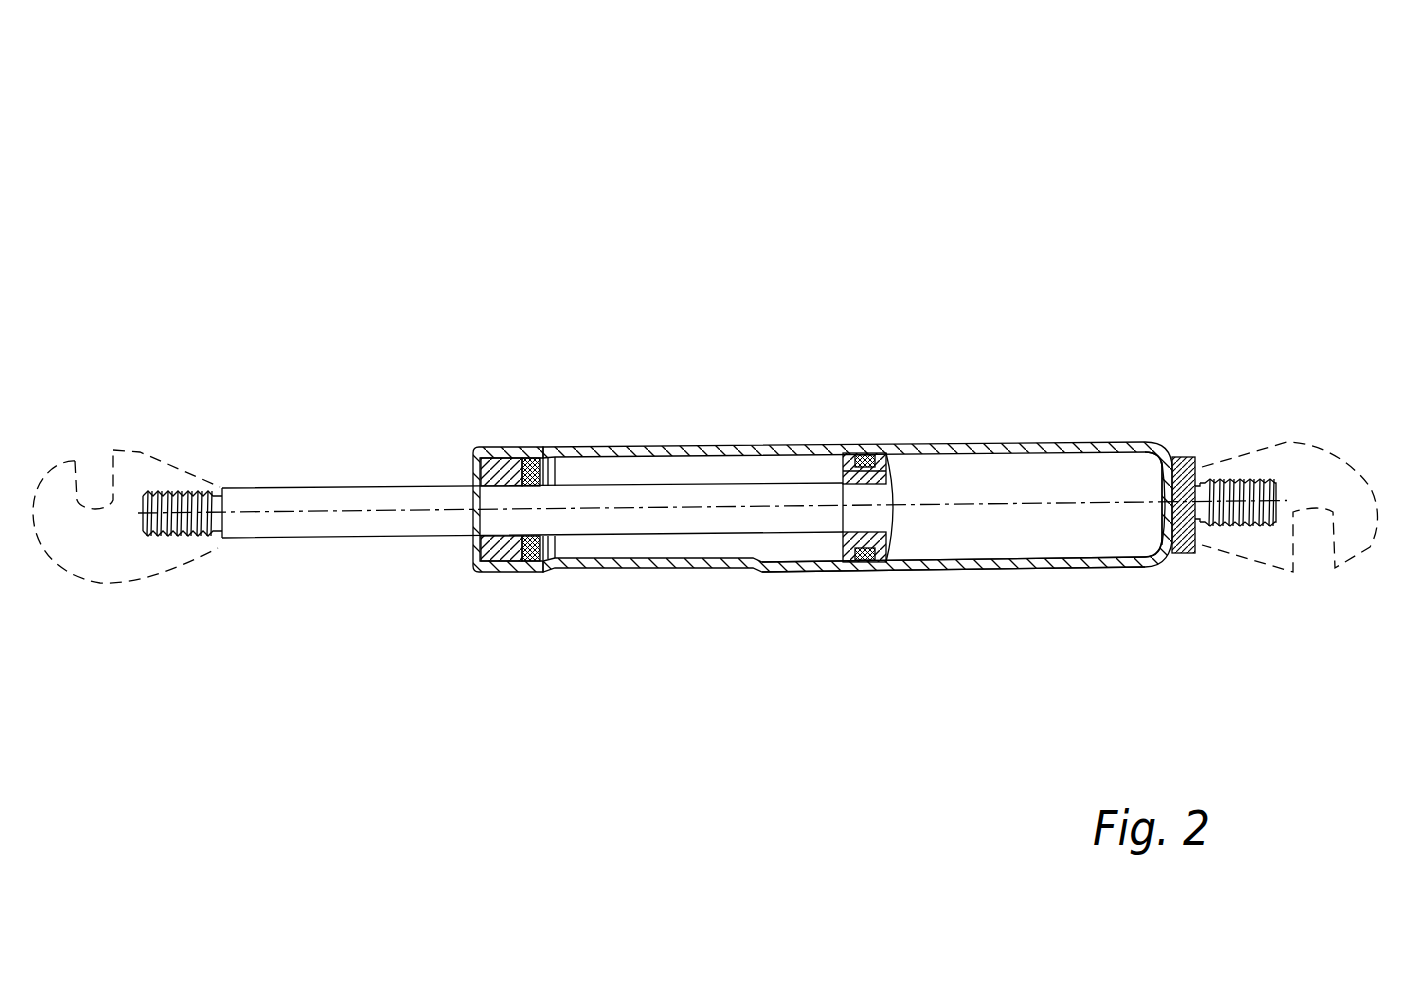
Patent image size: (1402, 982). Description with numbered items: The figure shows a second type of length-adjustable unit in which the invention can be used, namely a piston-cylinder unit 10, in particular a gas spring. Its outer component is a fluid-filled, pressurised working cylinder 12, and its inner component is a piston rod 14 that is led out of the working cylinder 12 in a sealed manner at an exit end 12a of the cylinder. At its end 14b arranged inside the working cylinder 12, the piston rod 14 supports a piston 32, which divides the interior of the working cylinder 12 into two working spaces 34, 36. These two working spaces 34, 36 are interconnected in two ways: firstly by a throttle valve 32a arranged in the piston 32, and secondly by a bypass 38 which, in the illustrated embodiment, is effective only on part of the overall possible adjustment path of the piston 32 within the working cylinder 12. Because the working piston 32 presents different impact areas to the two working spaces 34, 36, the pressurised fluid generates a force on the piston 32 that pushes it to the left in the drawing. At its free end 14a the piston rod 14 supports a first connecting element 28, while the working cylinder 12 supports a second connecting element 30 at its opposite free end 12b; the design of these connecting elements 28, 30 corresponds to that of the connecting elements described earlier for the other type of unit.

The piston-cylinder unit 10 is at (1117, 170).
The working cylinder 12 is at (720, 446).
The exit end 12a is at (474, 452).
The second end of cylinder with threaded stud 12b is at (1160, 453).
The piston rod 14 is at (712, 528).
The free end of piston rod 14a is at (163, 491).
The end of piston rod arranged in the working cylinder 14b is at (841, 523).
The first connecting element 28 is at (107, 566).
The second connecting element 30 is at (1362, 558).
The piston 32 is at (894, 525).
The throttle valve 32a is at (897, 452).
The working space 34 is at (580, 548).
The working space 36 is at (1140, 542).
The bypass 38 is at (957, 572).